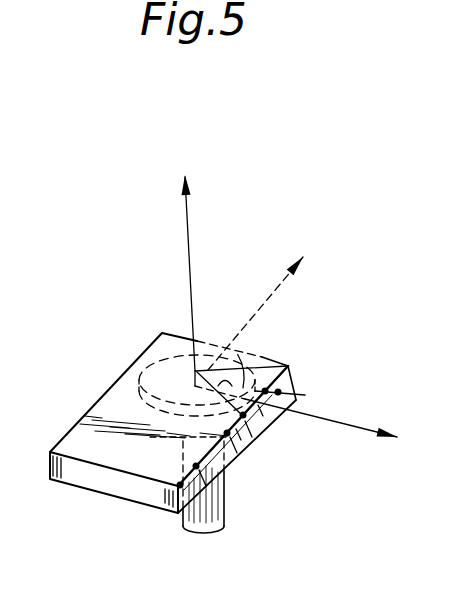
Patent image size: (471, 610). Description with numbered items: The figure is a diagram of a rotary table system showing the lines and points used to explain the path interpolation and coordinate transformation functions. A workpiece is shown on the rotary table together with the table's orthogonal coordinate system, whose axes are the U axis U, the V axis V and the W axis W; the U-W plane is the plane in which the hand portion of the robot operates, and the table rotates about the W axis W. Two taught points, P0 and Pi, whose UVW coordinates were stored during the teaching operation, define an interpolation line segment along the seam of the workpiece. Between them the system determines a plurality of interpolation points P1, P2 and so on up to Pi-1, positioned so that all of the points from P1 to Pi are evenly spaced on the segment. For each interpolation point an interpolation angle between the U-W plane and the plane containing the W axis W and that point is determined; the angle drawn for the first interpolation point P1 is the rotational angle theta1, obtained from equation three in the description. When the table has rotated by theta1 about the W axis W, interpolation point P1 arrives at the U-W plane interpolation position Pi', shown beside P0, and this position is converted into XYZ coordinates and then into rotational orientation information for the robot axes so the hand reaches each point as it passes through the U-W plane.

The W axis W is at (184, 261).
The V axis V is at (264, 304).
The U axis U is at (303, 418).
The rotational angle theta1 is at (240, 364).
The taught point P0 is at (266, 389).
The U-W plane interpolation position Pi' is at (299, 380).
The interpolation point P1 is at (245, 417).
The interpolation point P2 is at (229, 436).
The interpolation point Pi-1 is at (217, 486).
The taught point Pi is at (165, 529).